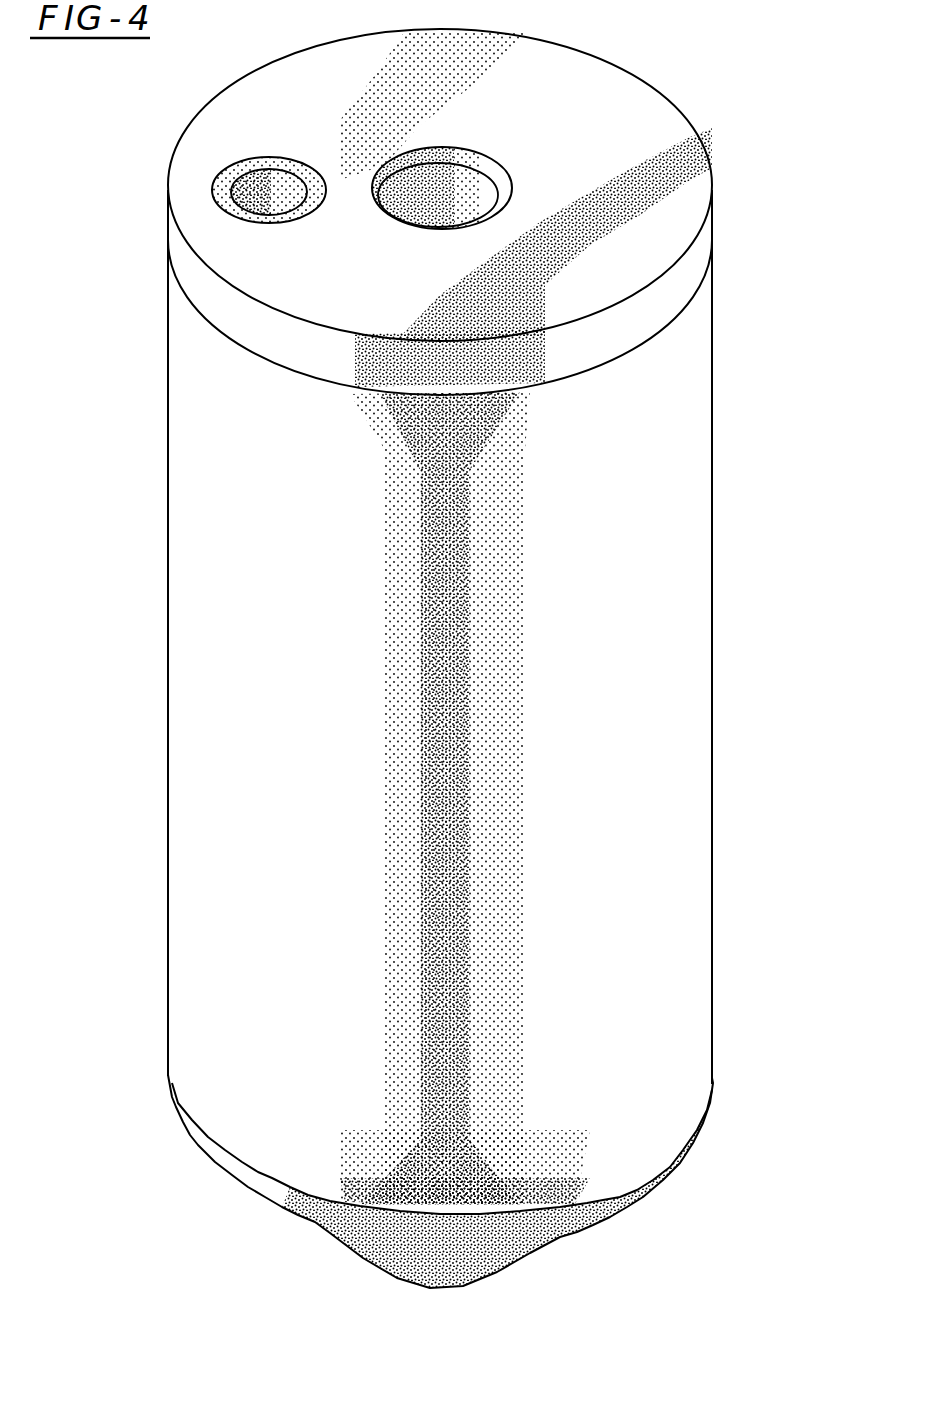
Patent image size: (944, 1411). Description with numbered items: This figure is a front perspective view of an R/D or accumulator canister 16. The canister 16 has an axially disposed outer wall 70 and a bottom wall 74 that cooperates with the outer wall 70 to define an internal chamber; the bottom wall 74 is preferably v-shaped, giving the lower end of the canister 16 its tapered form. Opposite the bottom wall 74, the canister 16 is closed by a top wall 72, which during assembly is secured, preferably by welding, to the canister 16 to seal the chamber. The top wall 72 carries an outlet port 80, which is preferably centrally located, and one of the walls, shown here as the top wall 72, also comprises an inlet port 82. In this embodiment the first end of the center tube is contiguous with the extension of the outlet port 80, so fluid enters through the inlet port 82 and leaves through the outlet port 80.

The R/D or accumulator canister 16 is at (735, 118).
The outer wall 70 is at (697, 488).
The top wall 72 is at (595, 108).
The bottom wall 74 is at (500, 1247).
The outlet port 80 is at (450, 187).
The inlet port 82 is at (253, 188).